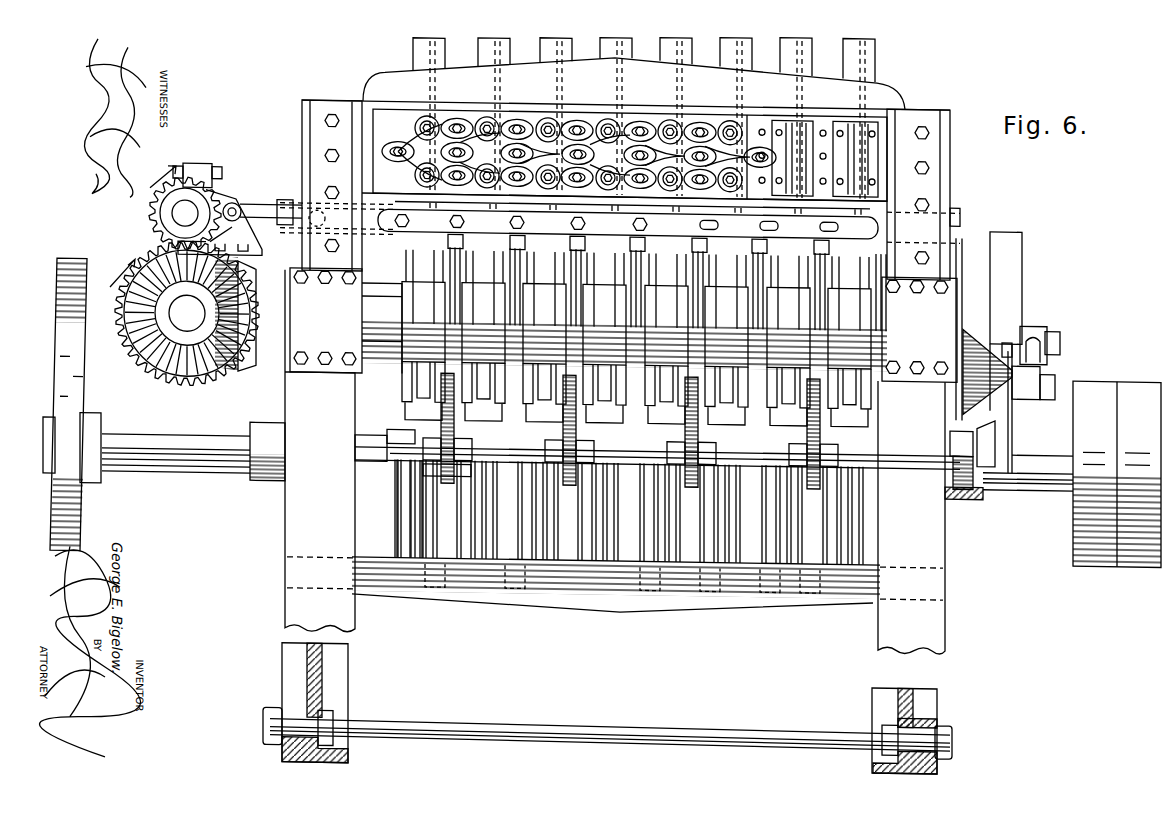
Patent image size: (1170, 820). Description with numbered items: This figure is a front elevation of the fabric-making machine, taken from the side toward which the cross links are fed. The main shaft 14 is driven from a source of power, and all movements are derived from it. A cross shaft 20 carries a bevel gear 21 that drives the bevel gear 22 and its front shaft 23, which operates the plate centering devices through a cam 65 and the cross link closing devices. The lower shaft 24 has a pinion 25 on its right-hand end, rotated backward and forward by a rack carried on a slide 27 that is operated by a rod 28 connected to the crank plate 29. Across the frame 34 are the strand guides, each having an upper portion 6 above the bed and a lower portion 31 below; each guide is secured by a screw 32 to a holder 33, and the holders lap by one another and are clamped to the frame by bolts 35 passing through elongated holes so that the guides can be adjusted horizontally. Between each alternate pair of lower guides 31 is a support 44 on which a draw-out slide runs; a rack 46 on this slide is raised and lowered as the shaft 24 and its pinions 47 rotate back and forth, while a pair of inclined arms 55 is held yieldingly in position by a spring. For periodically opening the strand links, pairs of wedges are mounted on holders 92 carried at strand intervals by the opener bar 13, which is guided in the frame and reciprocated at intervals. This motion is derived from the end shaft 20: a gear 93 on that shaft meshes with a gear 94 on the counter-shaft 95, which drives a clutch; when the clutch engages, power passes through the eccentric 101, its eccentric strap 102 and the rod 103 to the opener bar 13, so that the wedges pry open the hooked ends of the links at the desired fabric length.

The upper portion of strand guide 6 is at (478, 51).
The opener bar 13 is at (290, 225).
The main shaft 14 is at (1045, 483).
The cross shaft 20 is at (186, 316).
The bevel gear 21 is at (165, 370).
The bevel gear 22 is at (236, 379).
The front shaft 23 is at (383, 299).
The lower shaft 24 is at (386, 444).
The pinion 25 is at (957, 492).
The slide 27 is at (984, 462).
The rod 28 is at (1052, 356).
The crank plate 29 is at (1010, 265).
The lower portion of strand guide 31 is at (400, 524).
The screw 32 is at (862, 152).
The holder 33 is at (565, 143).
The frame 34 is at (634, 82).
The bolt 35 is at (487, 120).
The support 44 is at (443, 552).
The rack 46 is at (460, 415).
The pinion 47 is at (452, 476).
The inclined arm 55 is at (652, 395).
The cam 65 is at (410, 328).
The holder 92 is at (580, 240).
The gear 93 is at (178, 386).
The gear 94 is at (169, 213).
The counter-shaft 95 is at (176, 217).
The eccentric 101 is at (212, 195).
The eccentric strap 102 is at (198, 172).
The rod 103 is at (250, 206).